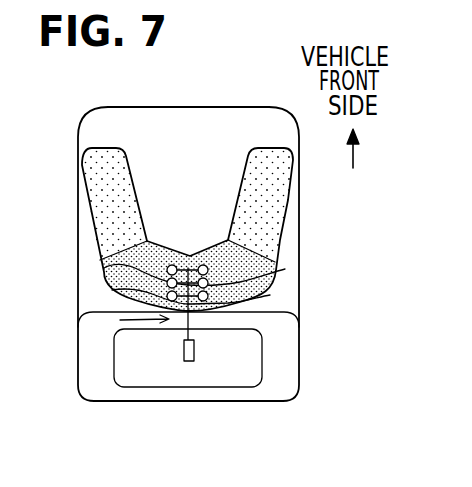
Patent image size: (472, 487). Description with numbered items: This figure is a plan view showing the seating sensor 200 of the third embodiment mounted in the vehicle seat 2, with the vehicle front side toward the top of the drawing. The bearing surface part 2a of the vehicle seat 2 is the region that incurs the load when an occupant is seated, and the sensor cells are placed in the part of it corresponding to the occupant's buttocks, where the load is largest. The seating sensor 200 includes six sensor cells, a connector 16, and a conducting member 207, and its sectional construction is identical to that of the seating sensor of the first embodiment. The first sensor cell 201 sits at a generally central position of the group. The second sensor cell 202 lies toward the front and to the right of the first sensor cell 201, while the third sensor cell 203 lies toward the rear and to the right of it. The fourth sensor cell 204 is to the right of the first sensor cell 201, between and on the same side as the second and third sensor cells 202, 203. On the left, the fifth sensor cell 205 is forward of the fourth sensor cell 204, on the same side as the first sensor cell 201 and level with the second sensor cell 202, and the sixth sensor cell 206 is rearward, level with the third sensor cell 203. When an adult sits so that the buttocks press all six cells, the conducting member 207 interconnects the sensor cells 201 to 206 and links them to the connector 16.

The vehicle seat 2 is at (269, 108).
The bearing surface part 2a is at (188, 117).
The connector 16 is at (194, 350).
The seating sensor 200 is at (120, 320).
The first sensor cell 201 is at (104, 268).
The second sensor cell 202 is at (275, 262).
The third sensor cell 203 is at (270, 295).
The fourth sensor cell 204 is at (285, 269).
The fifth sensor cell 205 is at (100, 260).
The sixth sensor cell 206 is at (112, 290).
The conducting member 207 is at (200, 320).